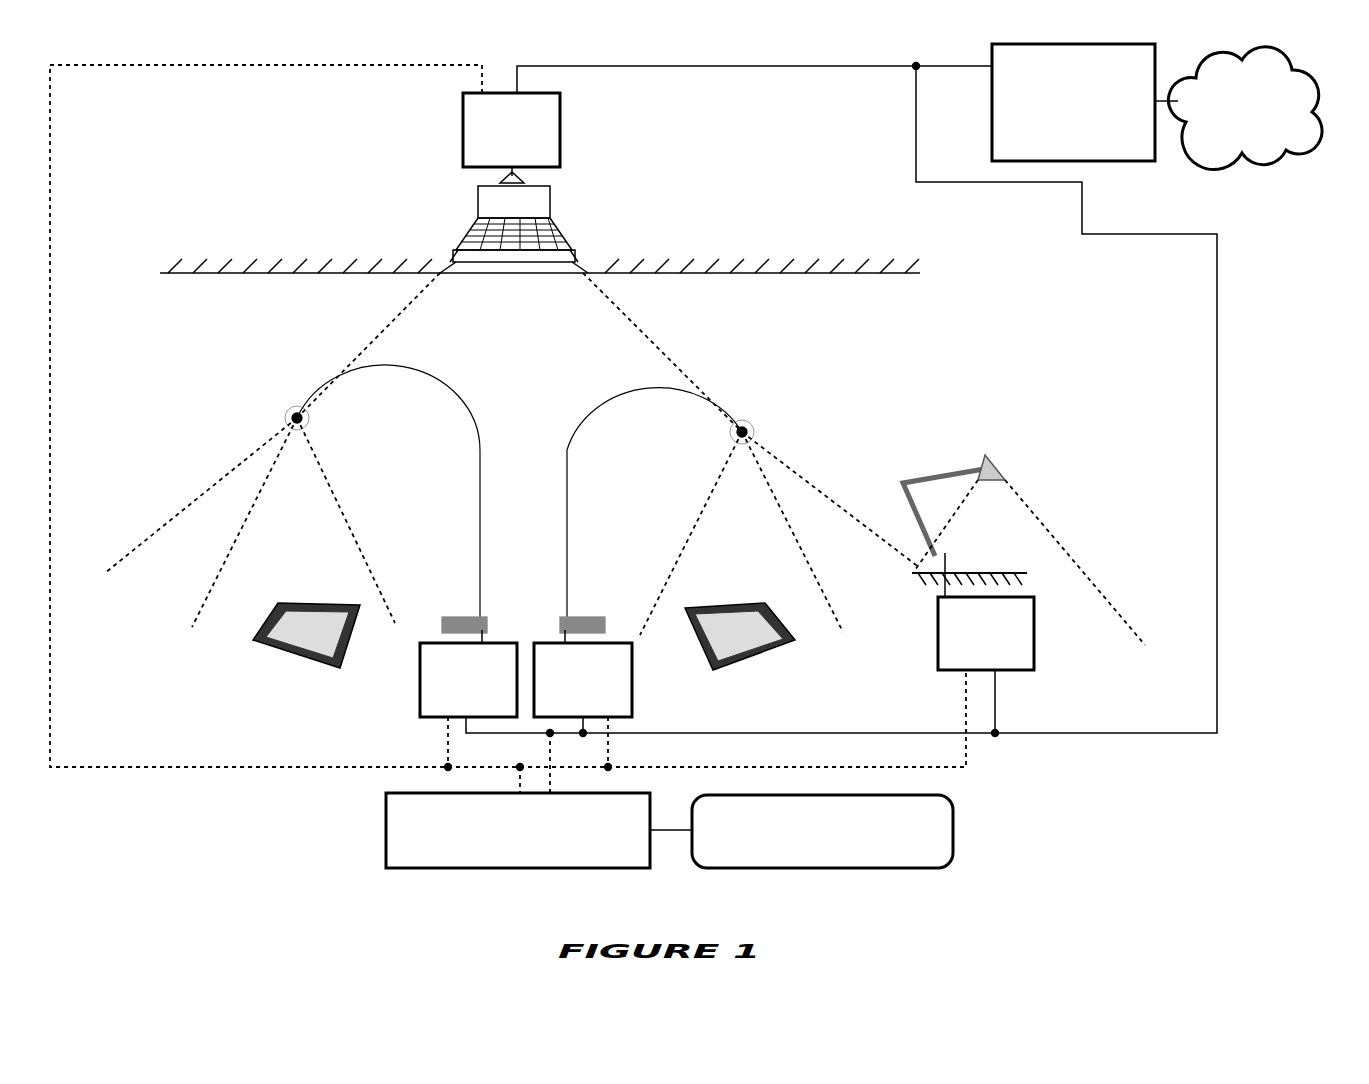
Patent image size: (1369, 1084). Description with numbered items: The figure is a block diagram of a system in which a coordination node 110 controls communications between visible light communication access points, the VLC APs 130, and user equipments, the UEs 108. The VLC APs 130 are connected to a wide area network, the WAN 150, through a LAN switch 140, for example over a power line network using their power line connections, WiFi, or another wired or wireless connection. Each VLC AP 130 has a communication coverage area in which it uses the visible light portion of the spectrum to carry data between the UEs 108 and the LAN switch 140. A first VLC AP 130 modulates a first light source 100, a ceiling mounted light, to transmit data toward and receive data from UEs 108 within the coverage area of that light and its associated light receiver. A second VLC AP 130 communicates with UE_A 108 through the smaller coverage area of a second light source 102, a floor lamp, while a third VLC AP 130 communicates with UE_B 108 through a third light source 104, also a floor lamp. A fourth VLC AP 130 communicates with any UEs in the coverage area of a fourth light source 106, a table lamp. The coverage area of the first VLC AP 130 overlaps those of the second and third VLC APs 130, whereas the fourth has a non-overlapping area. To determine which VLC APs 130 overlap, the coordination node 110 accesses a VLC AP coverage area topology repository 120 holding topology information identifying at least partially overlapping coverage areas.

The first light source 100 is at (550, 192).
The second light source 102 is at (283, 405).
The third light source 104 is at (755, 420).
The fourth light source 106 is at (1003, 475).
The UEs 108 is at (293, 655).
The coordination node 110 is at (468, 868).
The VLC AP coverage area topology repository 120 is at (847, 868).
The VLC APs 130 is at (463, 135).
The LAN switch 140 is at (1123, 161).
The WAN 150 is at (1265, 158).